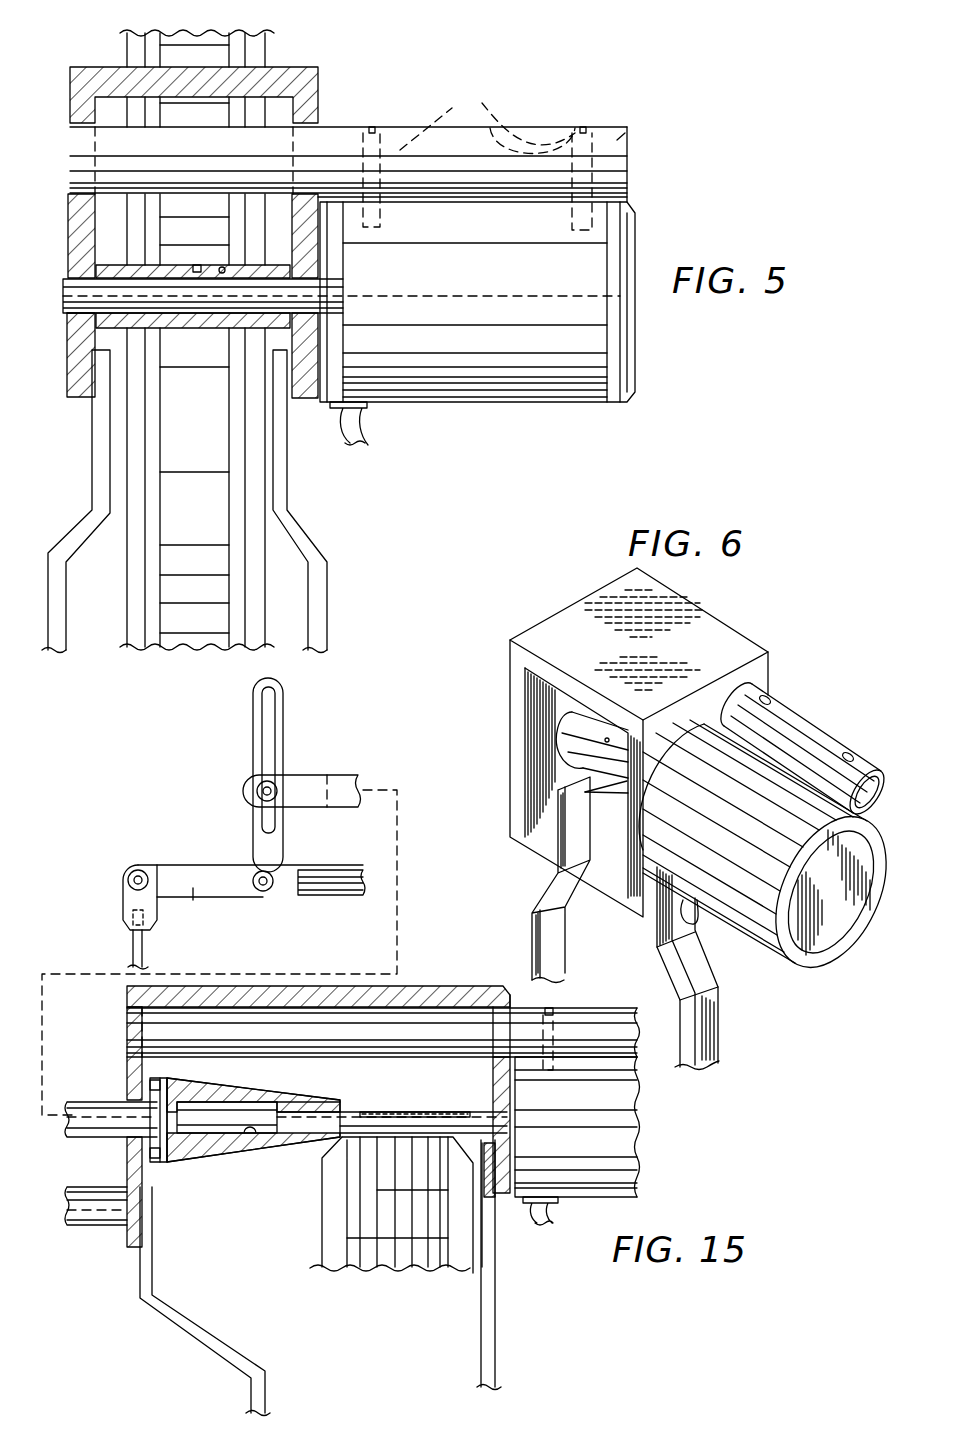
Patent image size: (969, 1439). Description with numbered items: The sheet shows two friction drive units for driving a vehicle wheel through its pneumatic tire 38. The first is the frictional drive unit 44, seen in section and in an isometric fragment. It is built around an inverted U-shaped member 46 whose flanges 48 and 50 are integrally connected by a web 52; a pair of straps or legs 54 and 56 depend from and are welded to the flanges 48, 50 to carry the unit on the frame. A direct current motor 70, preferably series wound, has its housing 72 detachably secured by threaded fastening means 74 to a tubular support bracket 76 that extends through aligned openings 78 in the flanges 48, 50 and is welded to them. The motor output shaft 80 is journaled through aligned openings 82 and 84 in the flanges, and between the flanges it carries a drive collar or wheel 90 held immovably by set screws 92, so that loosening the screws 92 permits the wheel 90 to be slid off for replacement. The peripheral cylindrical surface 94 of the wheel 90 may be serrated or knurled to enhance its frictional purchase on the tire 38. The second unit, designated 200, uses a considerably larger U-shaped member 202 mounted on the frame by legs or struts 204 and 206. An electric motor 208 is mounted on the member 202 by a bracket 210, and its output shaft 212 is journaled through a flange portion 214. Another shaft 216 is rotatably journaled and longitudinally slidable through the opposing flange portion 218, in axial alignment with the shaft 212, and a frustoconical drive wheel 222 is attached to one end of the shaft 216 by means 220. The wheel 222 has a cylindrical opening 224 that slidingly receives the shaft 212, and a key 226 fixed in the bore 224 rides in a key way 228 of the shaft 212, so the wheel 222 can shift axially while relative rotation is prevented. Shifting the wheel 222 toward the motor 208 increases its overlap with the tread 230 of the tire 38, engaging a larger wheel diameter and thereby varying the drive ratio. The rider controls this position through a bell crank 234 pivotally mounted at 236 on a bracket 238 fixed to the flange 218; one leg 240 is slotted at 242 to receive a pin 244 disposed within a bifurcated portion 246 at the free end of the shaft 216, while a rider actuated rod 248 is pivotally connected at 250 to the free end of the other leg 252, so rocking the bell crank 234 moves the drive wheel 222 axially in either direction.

In FIG. 15, the pneumatic tire 38 is at (330, 1205).
In FIG. 5, the frictional drive unit 44 is at (655, 167).
In FIG. 5, the inverted U-shaped member 46 is at (344, 97).
In FIG. 6, the inverted U-shaped member 46 is at (577, 589).
In FIG. 5, the flange 48 is at (303, 402).
In FIG. 5, the flange 50 is at (68, 360).
In FIG. 5, the web 52 is at (250, 83).
In FIG. 5, the strap or leg 54 is at (282, 493).
In FIG. 6, the strap or leg 54 is at (718, 1025).
In FIG. 5, the strap or leg 56 is at (98, 442).
In FIG. 6, the strap or leg 56 is at (535, 948).
In FIG. 5, the direct current motor 70 is at (585, 392).
In FIG. 6, the direct current motor 70 is at (880, 850).
In FIG. 6, the motor housing 72 is at (771, 938).
In FIG. 5, the threaded fastening means 74 is at (477, 154).
In FIG. 6, the threaded fastening means 74 is at (845, 757).
In FIG. 5, the tubular support bracket 76 is at (628, 132).
In FIG. 6, the tubular support bracket 76 is at (765, 702).
In FIG. 5, the aligned openings 78 is at (83, 202).
In FIG. 5, the output shaft 80 is at (65, 318).
In FIG. 5, the opening 82 is at (320, 290).
In FIG. 5, the opening 84 is at (66, 283).
In FIG. 5, the drive collar or wheel 90 is at (143, 278).
In FIG. 6, the drive collar or wheel 90 is at (583, 720).
In FIG. 5, the set screw 92 is at (197, 265).
In FIG. 5, the peripheral cylindrical surface 94 is at (222, 267).
In FIG. 6, the peripheral cylindrical surface 94 is at (607, 738).
In FIG. 15, the drive unit 200 is at (173, 1301).
In FIG. 15, the U-shaped member 202 is at (453, 966).
In FIG. 15, the leg or strut 204 is at (484, 1363).
In FIG. 15, the leg or strut 206 is at (215, 1352).
In FIG. 15, the electric motor 208 is at (623, 1173).
In FIG. 15, the bracket 210 is at (605, 1030).
In FIG. 15, the output shaft 212 is at (392, 1112).
In FIG. 15, the flange portion 214 is at (510, 1093).
In FIG. 15, the shaft 216 is at (349, 788).
In FIG. 15, the flange portion 218 is at (142, 1078).
In FIG. 15, the attaching means 220 is at (169, 1178).
In FIG. 15, the frustoconical drive wheel 222 is at (275, 1077).
In FIG. 15, the cylindrical opening 224 is at (245, 1137).
In FIG. 15, the key 226 is at (316, 1105).
In FIG. 15, the key way 228 is at (443, 1112).
In FIG. 15, the tread 230 is at (363, 1270).
In FIG. 15, the bell crank 234 is at (250, 895).
In FIG. 15, the pivot 236 is at (266, 897).
In FIG. 15, the bracket 238 is at (322, 895).
In FIG. 15, the slotted leg 240 is at (283, 712).
In FIG. 15, the slot 242 is at (263, 722).
In FIG. 15, the pin 244 is at (272, 787).
In FIG. 15, the bifurcated portion 246 is at (300, 797).
In FIG. 15, the rider actuated rod 248 is at (133, 945).
In FIG. 15, the pivotal connection 250 is at (135, 887).
In FIG. 15, the leg 252 is at (165, 870).